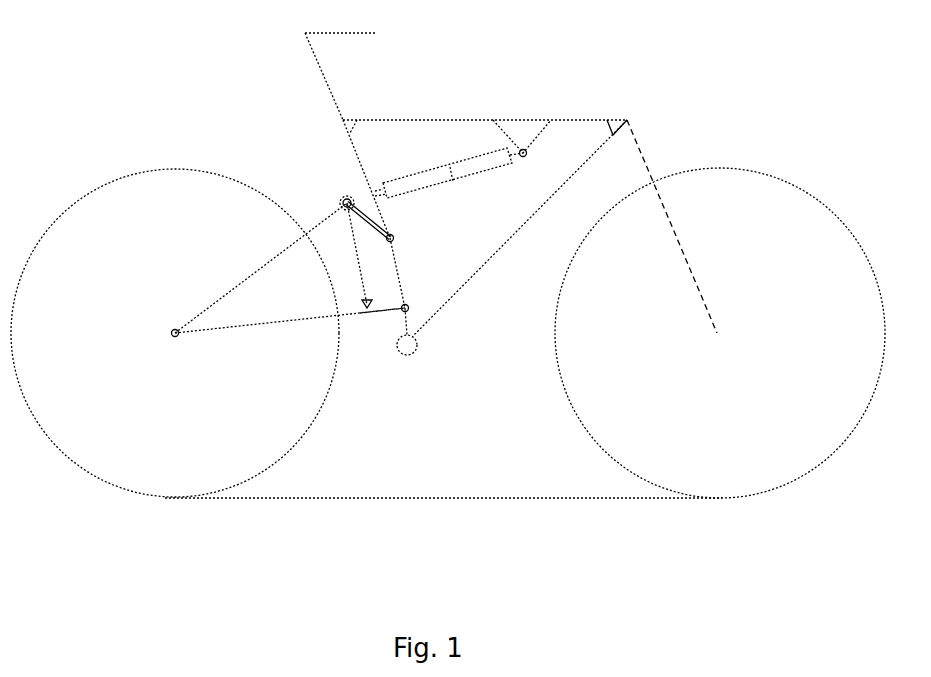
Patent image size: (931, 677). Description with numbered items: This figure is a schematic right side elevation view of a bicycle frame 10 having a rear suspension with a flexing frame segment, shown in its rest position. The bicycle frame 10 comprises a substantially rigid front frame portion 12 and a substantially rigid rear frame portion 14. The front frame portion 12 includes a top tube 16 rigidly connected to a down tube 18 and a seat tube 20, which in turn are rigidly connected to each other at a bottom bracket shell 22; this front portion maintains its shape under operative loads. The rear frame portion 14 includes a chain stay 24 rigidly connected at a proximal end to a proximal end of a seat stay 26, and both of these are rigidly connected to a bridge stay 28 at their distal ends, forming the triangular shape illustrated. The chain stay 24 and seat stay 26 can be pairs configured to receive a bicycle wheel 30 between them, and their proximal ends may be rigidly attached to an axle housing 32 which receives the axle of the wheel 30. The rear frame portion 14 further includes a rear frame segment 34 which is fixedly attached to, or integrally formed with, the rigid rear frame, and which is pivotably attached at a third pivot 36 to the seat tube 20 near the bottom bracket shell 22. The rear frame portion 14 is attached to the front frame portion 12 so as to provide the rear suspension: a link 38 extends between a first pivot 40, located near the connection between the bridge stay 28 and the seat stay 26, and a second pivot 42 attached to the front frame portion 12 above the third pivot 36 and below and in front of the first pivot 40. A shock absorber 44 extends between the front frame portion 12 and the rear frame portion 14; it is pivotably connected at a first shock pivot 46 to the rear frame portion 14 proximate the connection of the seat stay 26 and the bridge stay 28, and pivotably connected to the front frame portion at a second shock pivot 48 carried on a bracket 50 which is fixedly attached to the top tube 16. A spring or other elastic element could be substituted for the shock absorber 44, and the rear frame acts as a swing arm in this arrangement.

The bicycle frame 10 is at (600, 82).
The front frame portion 12 is at (437, 98).
The rear frame portion 14 is at (294, 340).
The top tube 16 is at (457, 120).
The down tube 18 is at (488, 262).
The seat tube 20 is at (355, 153).
The bottom bracket shell 22 is at (415, 352).
The chain stay 24 is at (242, 328).
The seat stay 26 is at (220, 297).
The bridge stay 28 is at (362, 270).
The bicycle wheel 30 is at (122, 175).
The axle housing 32 is at (172, 332).
The rear frame segment 34 is at (383, 312).
The third pivot 36 is at (410, 300).
The link 38 is at (372, 222).
The first pivot 40 is at (345, 203).
The second pivot 42 is at (396, 238).
The shock absorber 44 is at (470, 175).
The first shock pivot 46 is at (347, 200).
The second shock pivot 48 is at (525, 156).
The bracket 50 is at (540, 137).